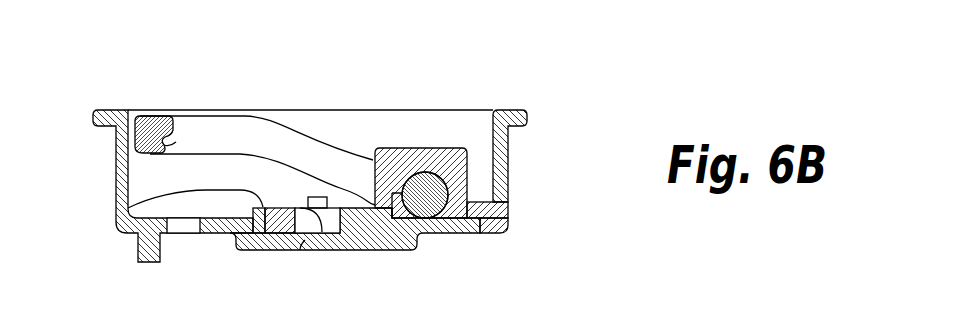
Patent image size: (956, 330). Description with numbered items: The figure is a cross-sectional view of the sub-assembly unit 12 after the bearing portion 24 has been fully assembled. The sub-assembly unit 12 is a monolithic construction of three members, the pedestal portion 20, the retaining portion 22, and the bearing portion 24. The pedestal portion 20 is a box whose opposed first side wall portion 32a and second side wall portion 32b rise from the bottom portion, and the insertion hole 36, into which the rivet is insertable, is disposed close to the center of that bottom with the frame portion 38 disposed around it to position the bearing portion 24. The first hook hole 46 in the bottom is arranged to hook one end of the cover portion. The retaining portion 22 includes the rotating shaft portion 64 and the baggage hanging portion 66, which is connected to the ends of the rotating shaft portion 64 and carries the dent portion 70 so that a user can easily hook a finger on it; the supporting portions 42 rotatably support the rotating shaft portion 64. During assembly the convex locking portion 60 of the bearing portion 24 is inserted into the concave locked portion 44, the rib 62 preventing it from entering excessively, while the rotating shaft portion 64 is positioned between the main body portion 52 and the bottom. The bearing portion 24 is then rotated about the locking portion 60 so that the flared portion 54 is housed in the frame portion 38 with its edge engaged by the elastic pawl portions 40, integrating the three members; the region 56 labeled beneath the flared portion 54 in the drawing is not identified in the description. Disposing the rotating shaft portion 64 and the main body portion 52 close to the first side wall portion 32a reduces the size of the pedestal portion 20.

The sub-assembly unit 12 is at (355, 172).
The pedestal portion 20 is at (327, 170).
The retaining portion 22 is at (233, 115).
The bearing portion 24 is at (413, 181).
The first side wall portion 32a is at (505, 143).
The second side wall portion 32b is at (117, 167).
The insertion hole 36 is at (305, 242).
The frame portion 38 is at (165, 200).
The elastic pawl portions 40 is at (316, 197).
The supporting portions 42 is at (437, 220).
The locked portion 44 is at (503, 190).
The first hook hole 46 is at (185, 228).
The main body portion 52 is at (402, 165).
The flared portion 54 is at (270, 207).
The cavity 56 is at (317, 233).
The locking portion 60 is at (493, 215).
The rib 62 is at (470, 190).
The rotating shaft portion 64 is at (427, 172).
The baggage hanging portion 66 is at (150, 120).
The dent portion 70 is at (176, 141).